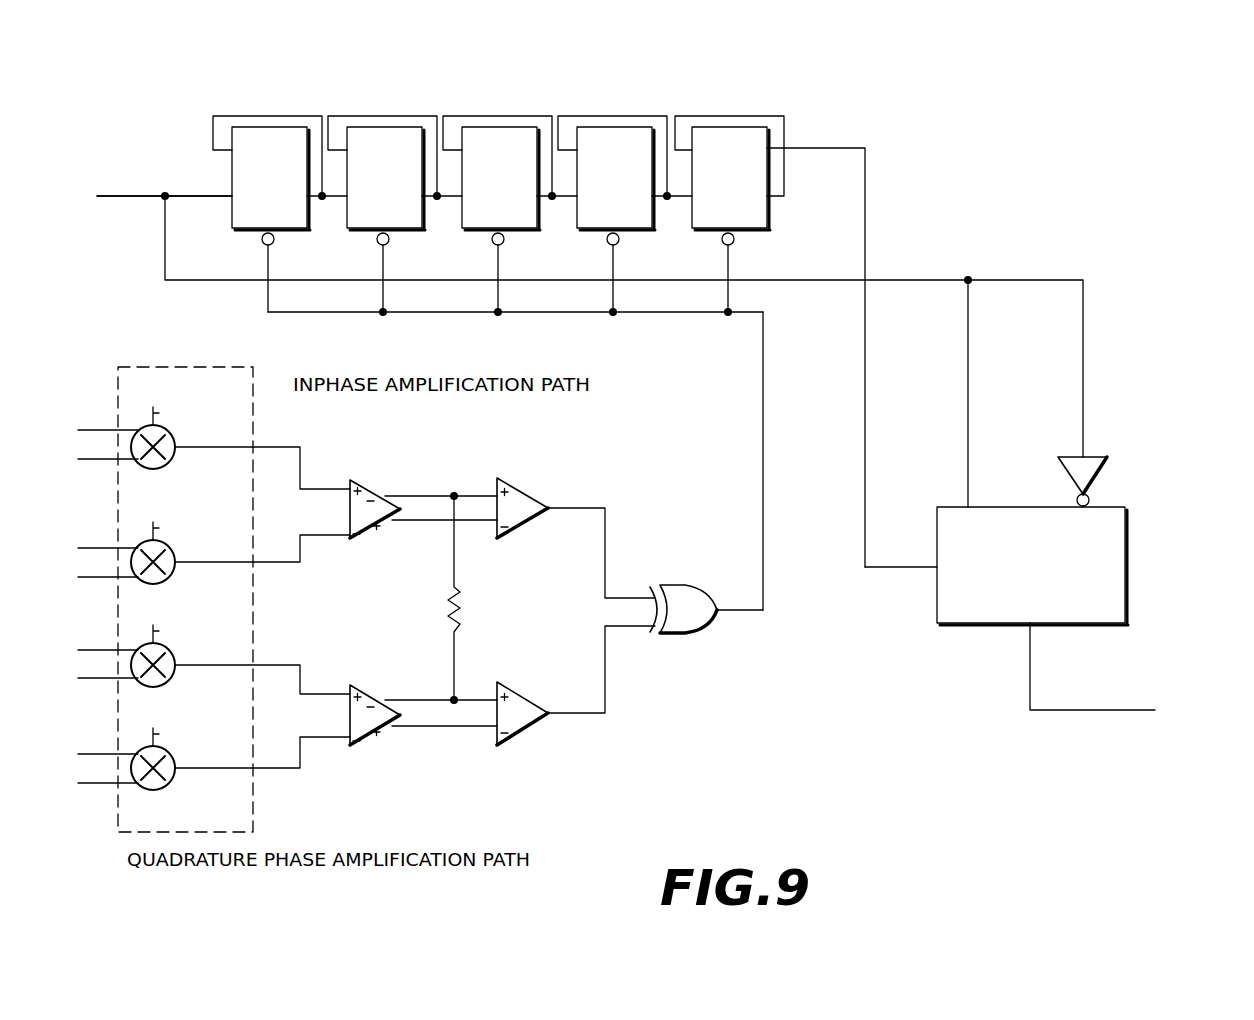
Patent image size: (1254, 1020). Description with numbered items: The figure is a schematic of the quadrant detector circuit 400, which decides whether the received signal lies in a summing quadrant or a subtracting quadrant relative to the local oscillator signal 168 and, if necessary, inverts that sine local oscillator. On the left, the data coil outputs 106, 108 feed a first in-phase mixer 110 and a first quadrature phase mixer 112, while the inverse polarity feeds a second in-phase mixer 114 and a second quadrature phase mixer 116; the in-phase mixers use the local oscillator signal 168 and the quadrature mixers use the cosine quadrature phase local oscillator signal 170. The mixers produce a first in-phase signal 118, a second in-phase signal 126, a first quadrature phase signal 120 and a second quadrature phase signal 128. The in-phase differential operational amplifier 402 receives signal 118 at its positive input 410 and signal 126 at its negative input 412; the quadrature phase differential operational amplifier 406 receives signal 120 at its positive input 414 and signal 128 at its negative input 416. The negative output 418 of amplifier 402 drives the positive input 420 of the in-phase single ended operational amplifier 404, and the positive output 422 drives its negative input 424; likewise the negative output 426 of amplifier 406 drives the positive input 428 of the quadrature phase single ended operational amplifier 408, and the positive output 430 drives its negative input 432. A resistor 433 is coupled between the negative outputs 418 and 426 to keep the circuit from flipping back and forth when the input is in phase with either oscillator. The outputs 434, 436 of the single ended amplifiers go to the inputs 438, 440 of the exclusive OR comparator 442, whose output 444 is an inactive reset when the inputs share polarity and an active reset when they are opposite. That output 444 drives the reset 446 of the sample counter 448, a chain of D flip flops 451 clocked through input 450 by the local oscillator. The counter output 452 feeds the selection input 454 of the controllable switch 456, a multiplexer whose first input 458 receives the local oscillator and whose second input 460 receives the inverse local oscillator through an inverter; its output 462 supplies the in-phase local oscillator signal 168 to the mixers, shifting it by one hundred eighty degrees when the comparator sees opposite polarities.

The quadrant detector circuit 400 is at (133, 69).
The sample counter 448 is at (498, 168).
The D flip flops 451 is at (258, 128).
The reset 446 is at (272, 243).
The input 450 is at (200, 195).
The output of the sample counter 452 is at (828, 148).
The first input 458 is at (968, 343).
The second input 460 is at (1090, 498).
The selection input 454 is at (866, 560).
The controllable switch 456 is at (1126, 556).
The output 462 is at (1031, 668).
The local oscillator signal 168 is at (686, 547).
The quadrature phase local oscillator signal 170 is at (183, 672).
The output 444 is at (764, 472).
The output of the data coil 106 is at (100, 429).
The output of the data coil 108 is at (97, 462).
The first in-phase mixer 110 is at (178, 437).
The second in-phase mixer 114 is at (178, 553).
The first quadrature phase mixer 112 is at (170, 680).
The second quadrature phase mixer 116 is at (162, 797).
The first in-phase signal 118 is at (193, 450).
The second in-phase signal 126 is at (258, 562).
The first quadrature phase signal 120 is at (268, 662).
The second quadrature phase signal 128 is at (218, 770).
The in-phase differential operational amplifier 402 is at (363, 490).
The in-phase single ended operational amplifier 404 is at (515, 486).
The quadrature phase differential operational amplifier 406 is at (363, 695).
The quadrature phase single ended operational amplifier 408 is at (515, 692).
The positive input 410 is at (313, 488).
The negative input 412 is at (338, 538).
The positive input 414 is at (323, 695).
The negative input 416 is at (337, 737).
The negative output 418 is at (437, 494).
The positive input 420 is at (478, 492).
The positive output 422 is at (405, 522).
The negative input 424 is at (466, 522).
The negative output 426 is at (437, 698).
The positive input 428 is at (485, 697).
The positive output 430 is at (405, 727).
The negative input 432 is at (458, 727).
The resistor 433 is at (458, 597).
The output 434 is at (566, 509).
The output 436 is at (567, 715).
The input 438 is at (638, 597).
The input 440 is at (633, 628).
The comparator 442 is at (707, 627).